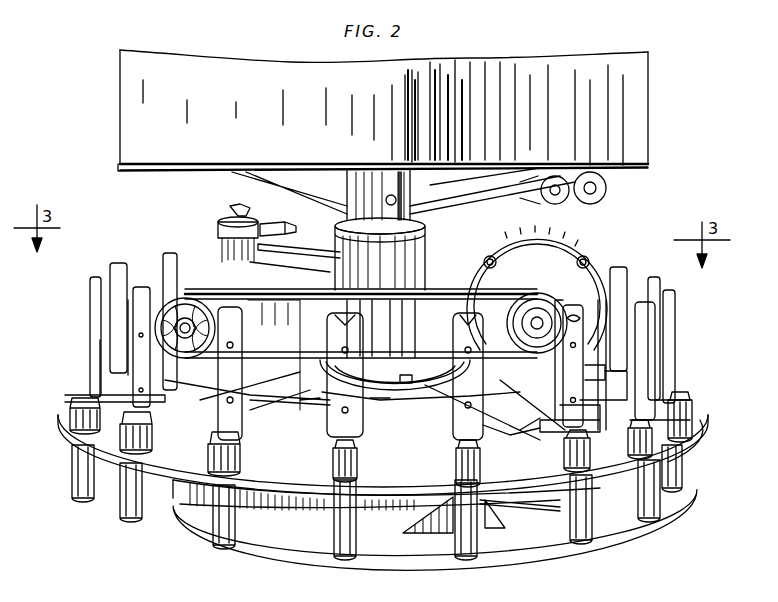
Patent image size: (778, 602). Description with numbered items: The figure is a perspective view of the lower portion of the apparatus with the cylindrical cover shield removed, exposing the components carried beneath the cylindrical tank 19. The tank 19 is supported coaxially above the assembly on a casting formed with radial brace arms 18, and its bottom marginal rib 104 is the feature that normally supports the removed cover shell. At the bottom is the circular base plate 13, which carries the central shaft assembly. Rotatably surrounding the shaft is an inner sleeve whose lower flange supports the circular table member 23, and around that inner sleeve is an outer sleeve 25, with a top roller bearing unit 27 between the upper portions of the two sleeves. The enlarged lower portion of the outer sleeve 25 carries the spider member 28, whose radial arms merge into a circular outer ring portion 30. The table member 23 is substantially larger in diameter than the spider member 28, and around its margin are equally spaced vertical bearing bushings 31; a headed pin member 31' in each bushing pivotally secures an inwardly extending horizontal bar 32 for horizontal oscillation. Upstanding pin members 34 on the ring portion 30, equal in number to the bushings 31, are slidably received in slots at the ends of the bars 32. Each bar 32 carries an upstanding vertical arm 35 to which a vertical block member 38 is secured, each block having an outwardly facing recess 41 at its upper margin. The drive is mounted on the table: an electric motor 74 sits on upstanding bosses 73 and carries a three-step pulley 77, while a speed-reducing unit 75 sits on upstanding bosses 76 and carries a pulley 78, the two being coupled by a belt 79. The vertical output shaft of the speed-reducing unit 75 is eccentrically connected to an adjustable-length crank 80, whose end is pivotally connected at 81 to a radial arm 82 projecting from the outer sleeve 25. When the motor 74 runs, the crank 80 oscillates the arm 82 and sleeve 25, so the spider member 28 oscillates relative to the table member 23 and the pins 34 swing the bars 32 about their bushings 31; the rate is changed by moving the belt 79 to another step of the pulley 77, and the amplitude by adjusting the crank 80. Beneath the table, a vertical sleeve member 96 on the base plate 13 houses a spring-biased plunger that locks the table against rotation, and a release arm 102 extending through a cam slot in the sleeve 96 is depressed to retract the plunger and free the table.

The circular base plate 13 is at (510, 552).
The radial brace arms 18 is at (455, 186).
The cylindrical tank 19 is at (630, 148).
The circular table member 23 is at (692, 446).
The outer sleeve 25 is at (410, 248).
The top roller bearing unit 27 is at (410, 390).
The spider member 28 is at (372, 410).
The circular outer ring portion 30 is at (276, 446).
The vertical bearing bushings 31 is at (395, 502).
The headed pin member 31' is at (559, 418).
The horizontal bar 32 is at (568, 442).
The upstanding pin members 34 is at (538, 430).
The upstanding vertical arm 35 is at (500, 368).
The vertical block member 38 is at (585, 375).
The outwardly facing recess 41 is at (573, 316).
The upstanding bosses 73 is at (582, 400).
The electric motor 74 is at (566, 234).
The speed-reducing unit 75 is at (182, 346).
The upstanding bosses 76 is at (286, 405).
The three-step pulley 77 is at (534, 316).
The pulley 78 is at (188, 300).
The belt 79 is at (437, 290).
The crank 80 is at (248, 218).
The pivotal connection 81 is at (274, 222).
The radial arm 82 is at (314, 252).
The vertical sleeve member 96 is at (445, 516).
The release arm 102 is at (505, 512).
The bottom marginal rib 104 is at (636, 170).